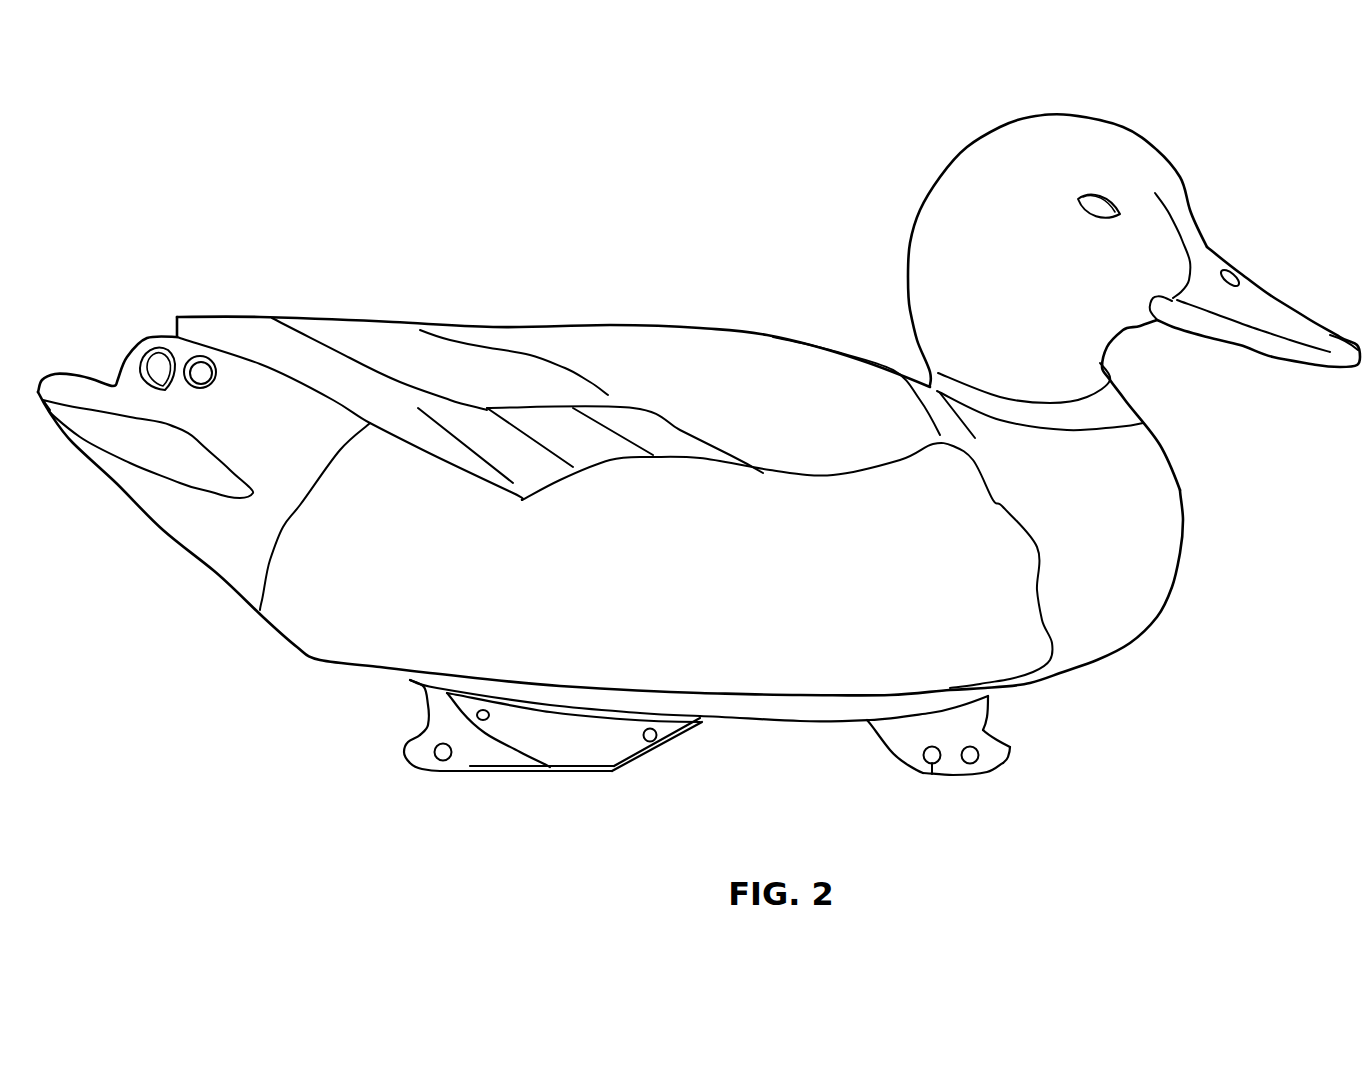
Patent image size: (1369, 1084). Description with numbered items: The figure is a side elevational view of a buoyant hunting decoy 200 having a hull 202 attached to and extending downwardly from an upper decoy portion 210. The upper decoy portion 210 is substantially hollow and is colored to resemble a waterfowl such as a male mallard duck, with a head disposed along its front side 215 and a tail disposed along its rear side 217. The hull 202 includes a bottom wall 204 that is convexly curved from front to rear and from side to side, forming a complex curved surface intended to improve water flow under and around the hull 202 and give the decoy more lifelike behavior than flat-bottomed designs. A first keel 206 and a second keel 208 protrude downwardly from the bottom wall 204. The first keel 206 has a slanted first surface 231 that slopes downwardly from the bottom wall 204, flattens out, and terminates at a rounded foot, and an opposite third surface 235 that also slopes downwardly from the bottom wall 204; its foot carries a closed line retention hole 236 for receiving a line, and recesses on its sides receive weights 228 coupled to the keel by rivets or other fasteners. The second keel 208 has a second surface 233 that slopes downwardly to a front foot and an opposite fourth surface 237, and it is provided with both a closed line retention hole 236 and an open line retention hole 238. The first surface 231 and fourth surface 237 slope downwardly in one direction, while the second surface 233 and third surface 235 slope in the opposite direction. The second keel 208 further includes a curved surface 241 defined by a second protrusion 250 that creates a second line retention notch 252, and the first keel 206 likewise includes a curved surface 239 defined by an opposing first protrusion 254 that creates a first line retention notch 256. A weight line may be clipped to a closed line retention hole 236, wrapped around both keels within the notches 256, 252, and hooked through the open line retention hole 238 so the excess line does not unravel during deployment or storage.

The buoyant hunting decoy 200 is at (152, 205).
The hull 202 is at (713, 756).
The bottom wall 204 is at (777, 712).
The first keel 206 is at (578, 765).
The second keel 208 is at (1002, 771).
The upper decoy portion 210 is at (643, 360).
The front side 215 is at (1200, 128).
The rear side 217 is at (190, 272).
The weights 228 is at (593, 752).
The first surface 231 is at (667, 747).
The second surface 233 is at (883, 747).
The third surface 235 is at (407, 682).
The closed line retention hole 236 is at (431, 757).
The fourth surface 237 is at (1030, 694).
The open line retention hole 238 is at (932, 778).
The curved surface 239 is at (405, 748).
The curved surface 241 is at (1010, 765).
The second protrusion 250 is at (1007, 756).
The second line retention notch 252 is at (1015, 718).
The first protrusion 254 is at (408, 747).
The first line retention notch 256 is at (400, 721).